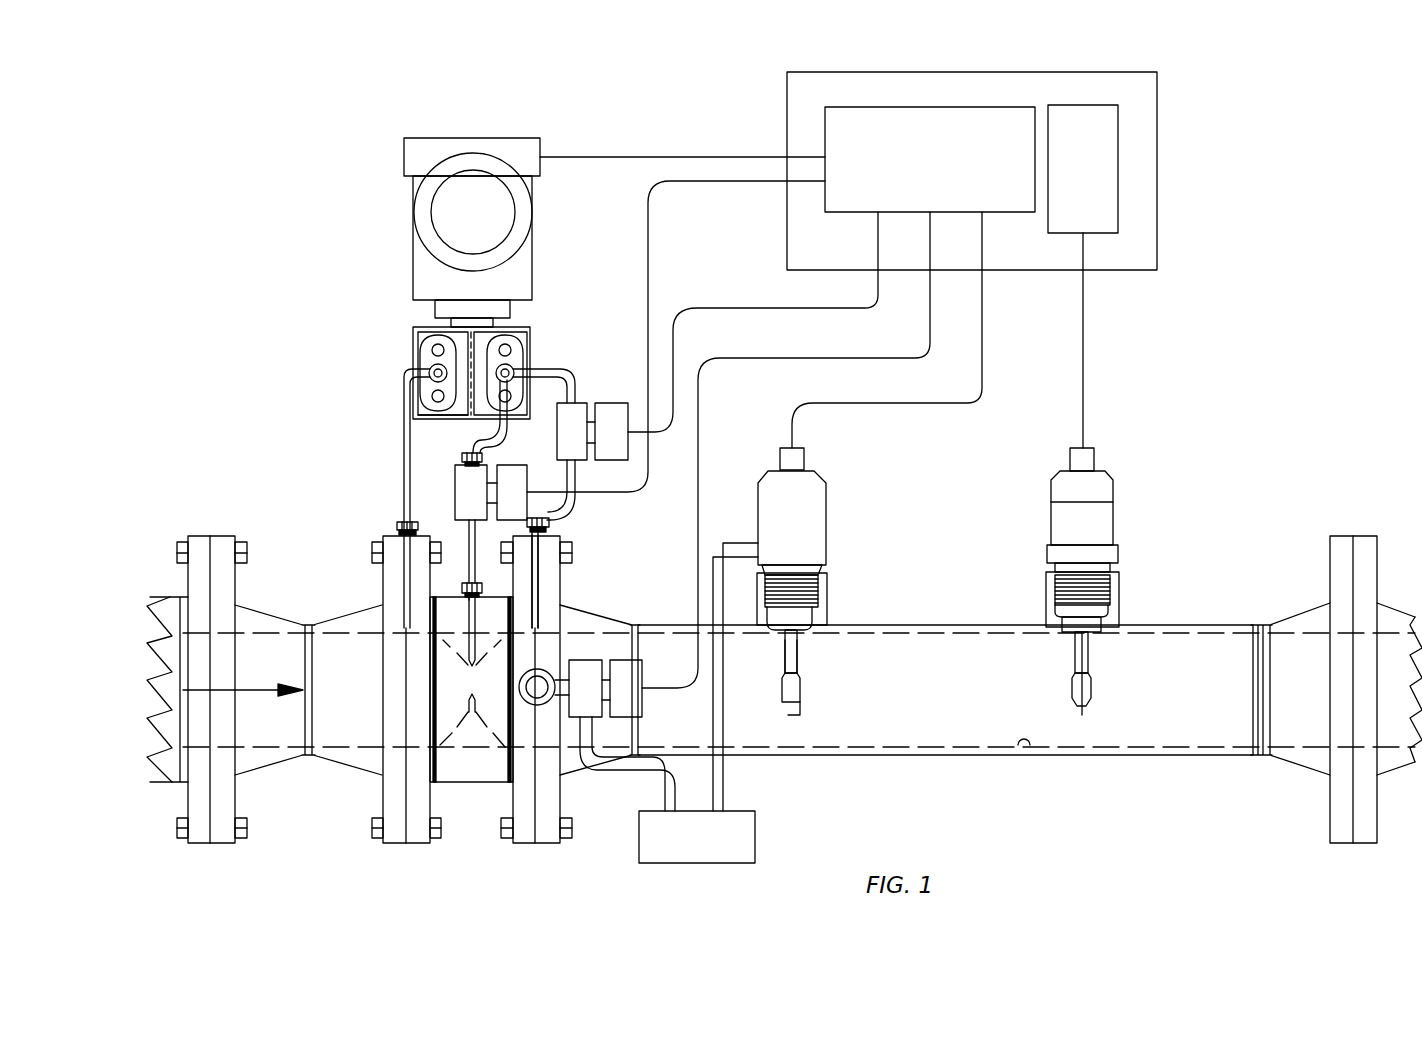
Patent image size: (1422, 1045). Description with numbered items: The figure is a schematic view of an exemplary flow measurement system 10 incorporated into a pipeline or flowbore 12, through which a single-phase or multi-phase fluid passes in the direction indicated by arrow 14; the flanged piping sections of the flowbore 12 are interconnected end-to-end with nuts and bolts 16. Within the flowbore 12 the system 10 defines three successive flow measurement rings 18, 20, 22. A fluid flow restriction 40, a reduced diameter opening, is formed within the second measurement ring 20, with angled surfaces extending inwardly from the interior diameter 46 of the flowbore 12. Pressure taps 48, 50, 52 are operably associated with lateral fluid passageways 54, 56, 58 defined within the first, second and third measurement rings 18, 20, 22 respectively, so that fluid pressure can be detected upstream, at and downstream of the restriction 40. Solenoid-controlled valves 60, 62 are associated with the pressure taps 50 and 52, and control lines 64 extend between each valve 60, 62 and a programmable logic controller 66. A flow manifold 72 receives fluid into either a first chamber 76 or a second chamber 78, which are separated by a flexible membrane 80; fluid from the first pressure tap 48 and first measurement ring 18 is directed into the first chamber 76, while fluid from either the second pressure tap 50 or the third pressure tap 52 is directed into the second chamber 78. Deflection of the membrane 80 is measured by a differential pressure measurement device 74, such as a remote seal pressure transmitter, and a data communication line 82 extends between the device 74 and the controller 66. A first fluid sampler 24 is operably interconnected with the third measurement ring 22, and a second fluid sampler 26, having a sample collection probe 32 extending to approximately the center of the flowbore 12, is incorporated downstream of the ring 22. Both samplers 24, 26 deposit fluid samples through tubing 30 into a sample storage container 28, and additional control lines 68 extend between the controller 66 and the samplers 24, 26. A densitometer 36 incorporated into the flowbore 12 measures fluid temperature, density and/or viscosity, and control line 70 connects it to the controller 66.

The flow measurement system 10 is at (372, 247).
The flowbore 12 is at (918, 790).
The arrow 14 is at (243, 699).
The nuts and bolts 16 is at (183, 548).
The first flow measurement ring 18 is at (405, 843).
The second flow measurement ring 20 is at (481, 820).
The third flow measurement ring 22 is at (553, 880).
The first fluid sampler 24 is at (580, 688).
The second fluid sampler 26 is at (812, 522).
The sample storage container 28 is at (697, 837).
The tubing 30 is at (662, 782).
The sample collection probe 32 is at (803, 690).
The densitometer 36 is at (1104, 518).
The fluid flow restriction 40 is at (462, 712).
The interior diameter 46 is at (1018, 745).
The first pressure tap 48 is at (401, 522).
The second pressure tap 50 is at (464, 582).
The third pressure tap 52 is at (555, 523).
The lateral fluid passageway 54 is at (407, 585).
The lateral fluid passageway 56 is at (468, 627).
The lateral fluid passageway 58 is at (540, 590).
The solenoid-controlled valve 60 is at (462, 498).
The solenoid-controlled valve 62 is at (592, 431).
The control lines 64 is at (762, 308).
The programmable logic controller 66 is at (792, 92).
The control lines 68 is at (832, 398).
The control line 70 is at (1083, 358).
The flow manifold 72 is at (417, 348).
The differential pressure measurement device 74 is at (483, 148).
The first chamber 76 is at (430, 330).
The second chamber 78 is at (515, 327).
The flexible membrane 80 is at (457, 410).
The data communication line 82 is at (660, 157).